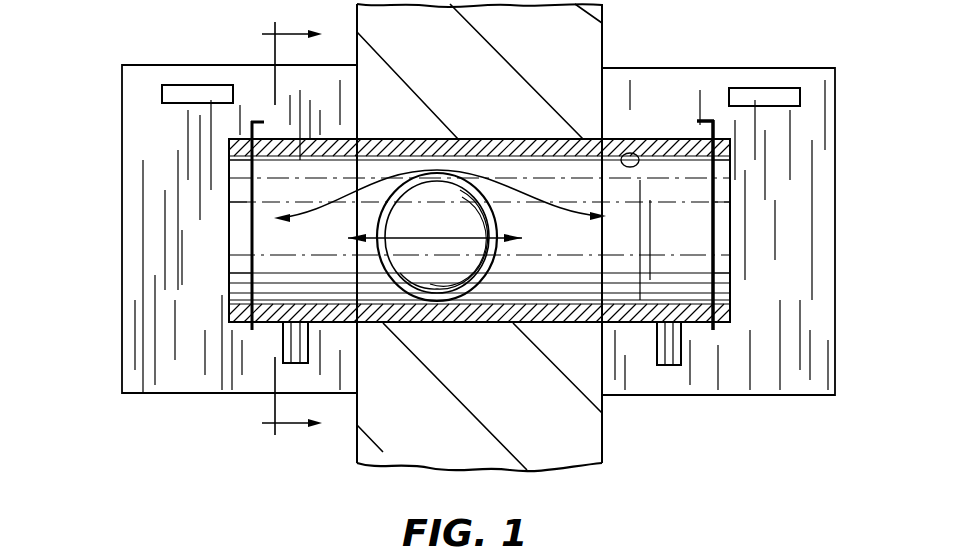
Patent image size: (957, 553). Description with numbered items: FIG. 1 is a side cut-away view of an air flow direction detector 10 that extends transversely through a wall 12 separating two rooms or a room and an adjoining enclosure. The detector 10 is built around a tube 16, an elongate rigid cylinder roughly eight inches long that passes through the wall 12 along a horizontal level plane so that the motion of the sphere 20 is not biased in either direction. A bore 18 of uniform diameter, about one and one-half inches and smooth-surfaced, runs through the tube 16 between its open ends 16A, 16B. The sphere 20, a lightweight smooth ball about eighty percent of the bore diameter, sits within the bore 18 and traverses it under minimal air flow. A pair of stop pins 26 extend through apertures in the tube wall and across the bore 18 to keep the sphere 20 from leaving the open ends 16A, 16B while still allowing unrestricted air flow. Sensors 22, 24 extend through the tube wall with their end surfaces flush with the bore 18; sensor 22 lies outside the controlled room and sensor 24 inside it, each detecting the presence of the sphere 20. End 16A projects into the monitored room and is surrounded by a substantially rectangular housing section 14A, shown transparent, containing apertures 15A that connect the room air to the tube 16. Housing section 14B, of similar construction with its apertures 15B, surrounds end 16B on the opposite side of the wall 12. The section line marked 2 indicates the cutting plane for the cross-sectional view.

The air flow direction detector 10 is at (96, 194).
The wall 12 is at (602, 46).
The housing section 14A is at (835, 68).
The housing section 14B is at (122, 393).
The apertures 15A is at (765, 88).
The apertures 15B is at (178, 85).
The tube 16 is at (316, 139).
The open end 16A is at (762, 316).
The open end 16B is at (212, 318).
The bore 18 is at (628, 158).
The sphere 20 is at (490, 266).
The sensor 22 is at (300, 364).
The sensor 24 is at (677, 366).
The stop pins 26 is at (250, 245).
The section line 2- 2 is at (302, 230).